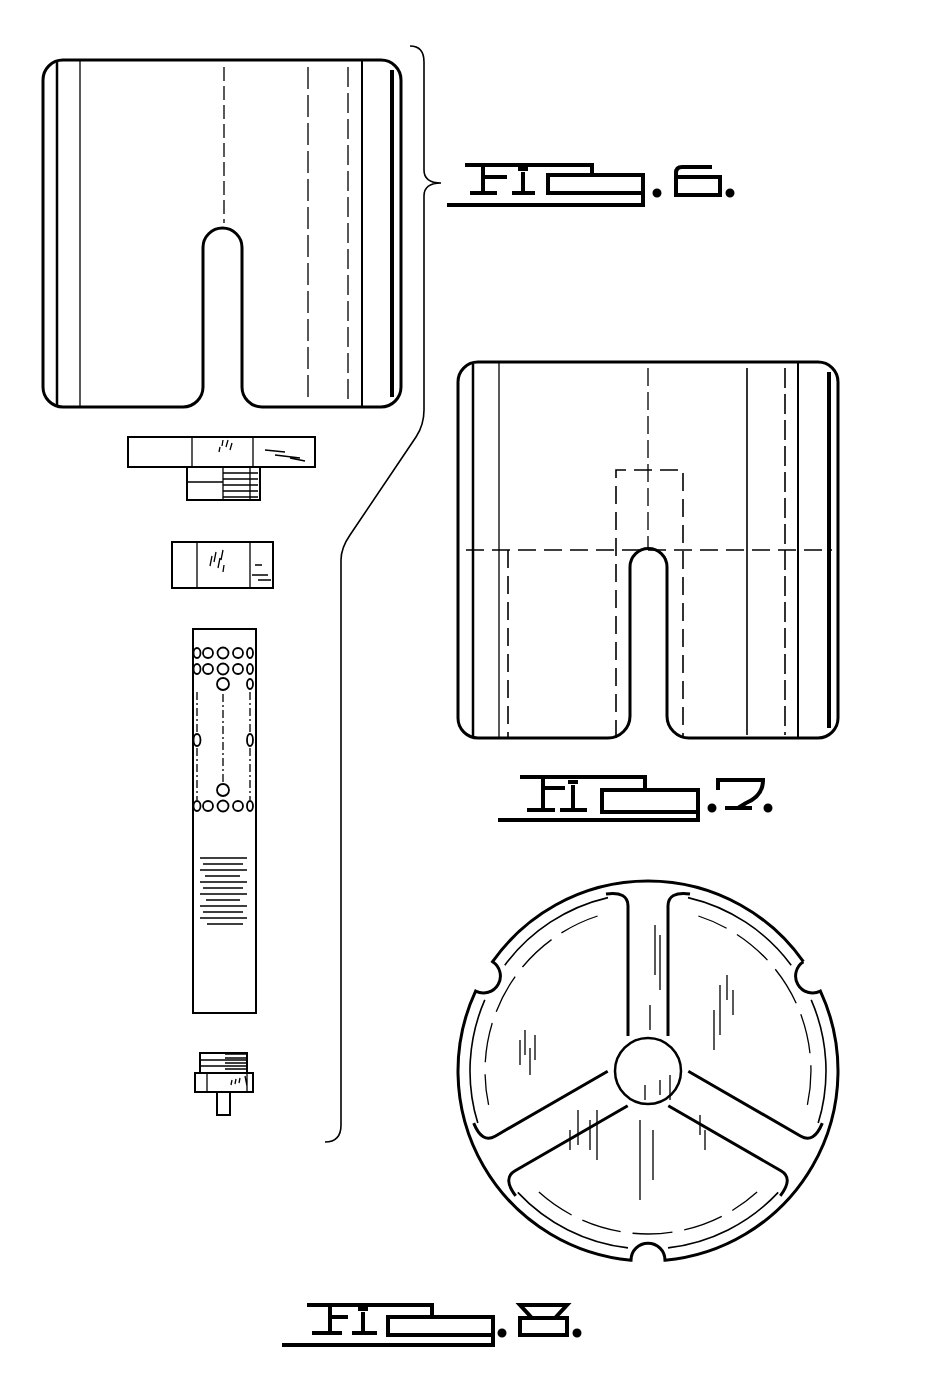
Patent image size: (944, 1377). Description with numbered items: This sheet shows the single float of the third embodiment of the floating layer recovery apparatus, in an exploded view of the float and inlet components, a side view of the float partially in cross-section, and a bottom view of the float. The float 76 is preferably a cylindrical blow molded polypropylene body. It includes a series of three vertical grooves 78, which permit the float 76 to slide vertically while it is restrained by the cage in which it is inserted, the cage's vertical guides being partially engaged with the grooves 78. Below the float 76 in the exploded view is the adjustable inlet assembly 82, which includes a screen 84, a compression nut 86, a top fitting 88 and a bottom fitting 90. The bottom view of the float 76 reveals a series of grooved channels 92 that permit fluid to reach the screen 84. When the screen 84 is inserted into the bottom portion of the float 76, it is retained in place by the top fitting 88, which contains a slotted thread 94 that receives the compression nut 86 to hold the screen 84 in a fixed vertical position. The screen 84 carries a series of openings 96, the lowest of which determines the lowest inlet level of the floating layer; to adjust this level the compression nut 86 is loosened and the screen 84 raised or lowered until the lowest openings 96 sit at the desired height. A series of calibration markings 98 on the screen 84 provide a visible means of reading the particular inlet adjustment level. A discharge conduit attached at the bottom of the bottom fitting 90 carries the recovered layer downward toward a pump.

In FIG. 6, the float 76 is at (295, 58).
In FIG. 7, the float 76 is at (750, 362).
In FIG. 8, the float 76 is at (752, 908).
In FIG. 6, the vertical grooves 78 is at (70, 177).
In FIG. 7, the vertical grooves 78 is at (808, 668).
In FIG. 8, the vertical grooves 78 is at (810, 995).
In FIG. 6, the adjustable inlet assembly 82 is at (67, 1128).
In FIG. 6, the screen 84 is at (193, 987).
In FIG. 6, the compression nut 86 is at (172, 556).
In FIG. 6, the top fitting 88 is at (128, 452).
In FIG. 6, the bottom fitting 90 is at (195, 1085).
In FIG. 6, the grooved channels 92 is at (215, 276).
In FIG. 7, the grooved channels 92 is at (655, 598).
In FIG. 8, the grooved channels 92 is at (640, 953).
In FIG. 6, the slotted thread 94 is at (223, 478).
In FIG. 6, the openings 96 is at (193, 668).
In FIG. 6, the calibration markings 98 is at (203, 898).